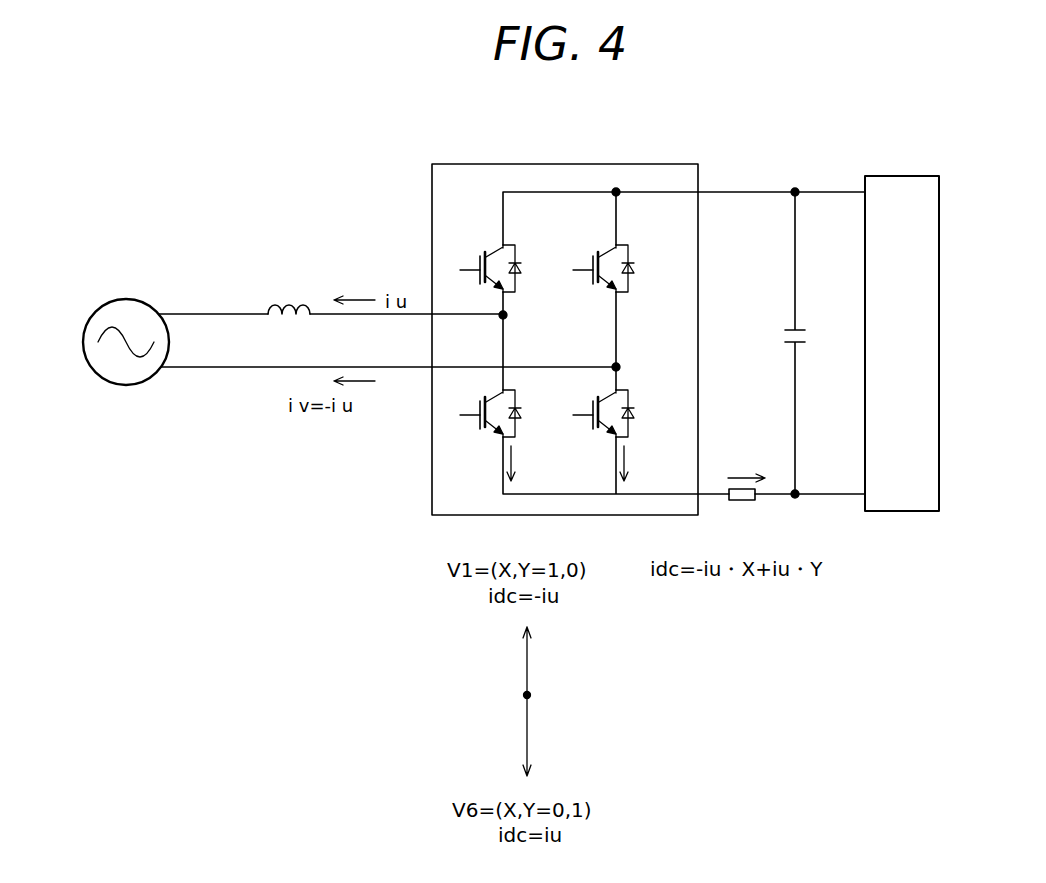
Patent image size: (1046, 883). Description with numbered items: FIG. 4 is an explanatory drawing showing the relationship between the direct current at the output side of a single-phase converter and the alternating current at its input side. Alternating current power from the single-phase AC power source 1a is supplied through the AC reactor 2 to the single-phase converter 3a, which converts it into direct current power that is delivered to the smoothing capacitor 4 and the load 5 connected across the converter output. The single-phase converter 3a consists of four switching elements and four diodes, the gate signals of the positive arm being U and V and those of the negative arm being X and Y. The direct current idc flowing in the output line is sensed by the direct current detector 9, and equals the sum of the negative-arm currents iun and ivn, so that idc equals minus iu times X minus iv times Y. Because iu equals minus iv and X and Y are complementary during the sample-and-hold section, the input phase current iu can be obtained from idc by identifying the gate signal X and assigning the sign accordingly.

The single-phase AC power source 1a is at (137, 298).
The AC reactor 2 is at (286, 300).
The single-phase converter 3a is at (432, 205).
The smoothing capacitor 4 is at (790, 328).
The load 5 is at (905, 513).
The direct current detector 9 is at (747, 502).